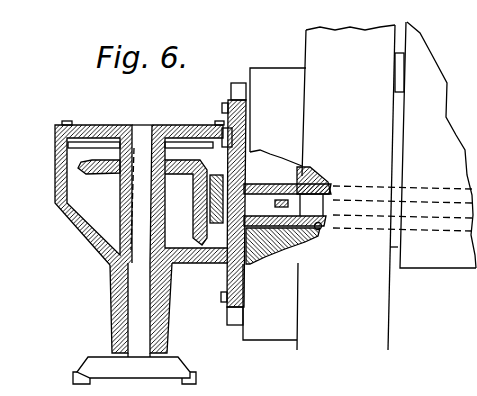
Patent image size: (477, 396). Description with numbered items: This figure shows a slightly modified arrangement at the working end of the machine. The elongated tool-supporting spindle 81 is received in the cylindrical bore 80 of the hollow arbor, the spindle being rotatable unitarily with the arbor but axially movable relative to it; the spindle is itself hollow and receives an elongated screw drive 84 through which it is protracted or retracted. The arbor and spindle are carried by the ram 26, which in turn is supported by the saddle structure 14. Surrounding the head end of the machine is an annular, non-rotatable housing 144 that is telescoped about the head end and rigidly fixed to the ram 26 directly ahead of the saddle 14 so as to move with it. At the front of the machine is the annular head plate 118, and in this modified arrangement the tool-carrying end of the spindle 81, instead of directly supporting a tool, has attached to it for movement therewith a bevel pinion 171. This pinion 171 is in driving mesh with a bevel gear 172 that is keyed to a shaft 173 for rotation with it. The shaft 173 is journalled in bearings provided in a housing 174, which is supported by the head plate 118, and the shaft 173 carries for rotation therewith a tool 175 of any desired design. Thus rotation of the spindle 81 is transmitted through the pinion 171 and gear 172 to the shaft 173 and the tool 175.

The saddle structure 14 is at (438, 145).
The ram 26 is at (394, 247).
The cylindrical bore 80 is at (320, 229).
The tool-supporting spindle 81 is at (322, 182).
The screw drive 84 is at (8, 380).
The head plate 118 is at (268, 80).
The housing 144 is at (346, 187).
The bevel pinion 171 is at (193, 247).
The bevel gear 172 is at (185, 163).
The shaft 173 is at (139, 308).
The housing 174 is at (93, 238).
The tool 175 is at (133, 372).